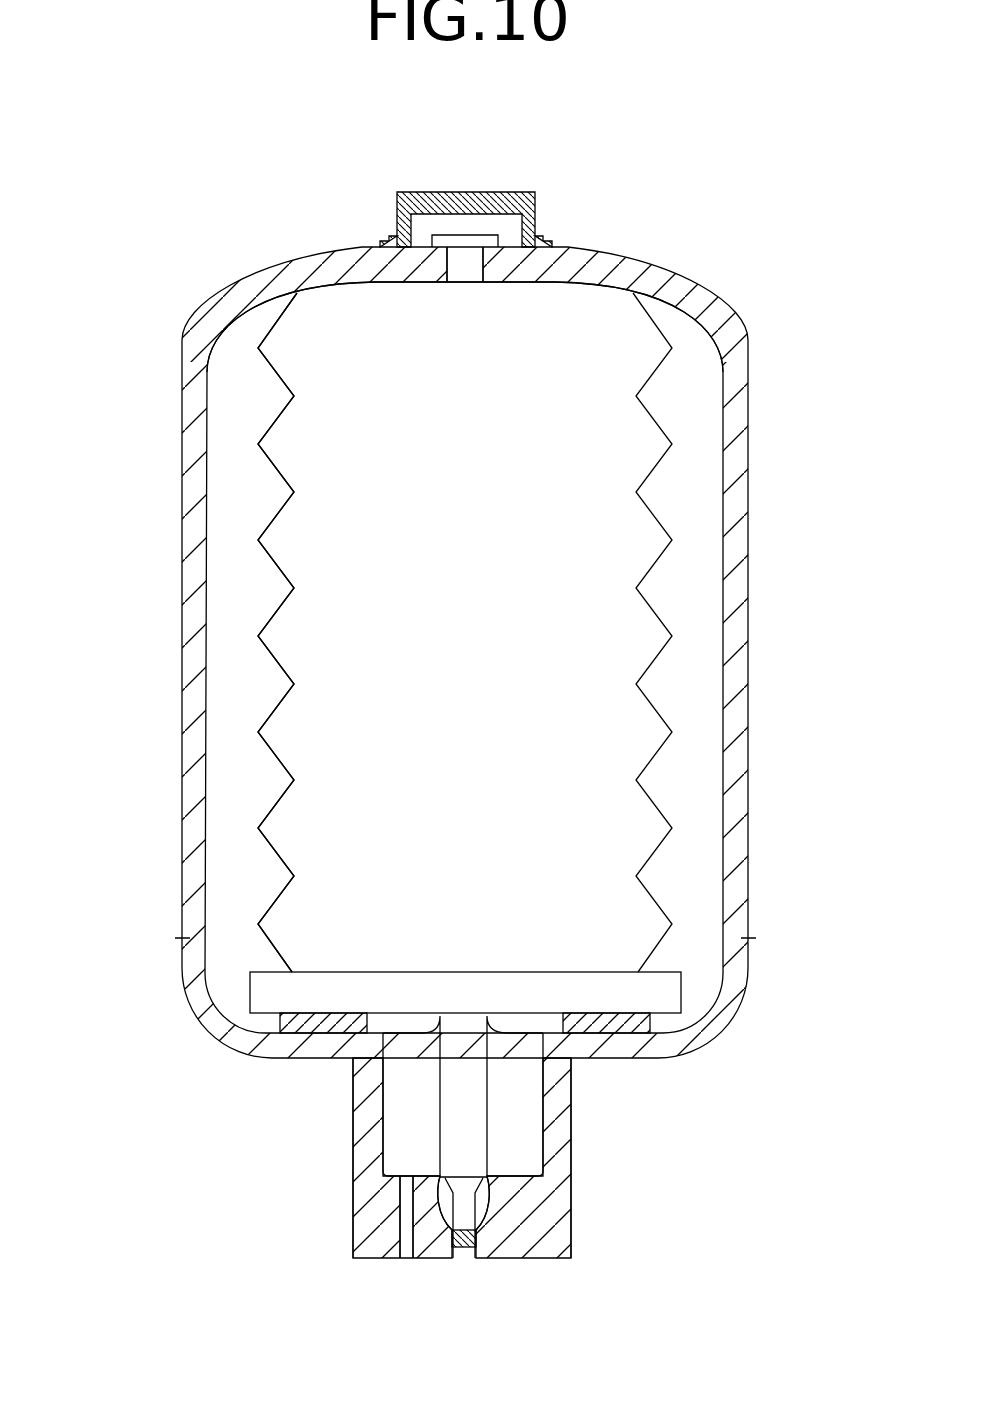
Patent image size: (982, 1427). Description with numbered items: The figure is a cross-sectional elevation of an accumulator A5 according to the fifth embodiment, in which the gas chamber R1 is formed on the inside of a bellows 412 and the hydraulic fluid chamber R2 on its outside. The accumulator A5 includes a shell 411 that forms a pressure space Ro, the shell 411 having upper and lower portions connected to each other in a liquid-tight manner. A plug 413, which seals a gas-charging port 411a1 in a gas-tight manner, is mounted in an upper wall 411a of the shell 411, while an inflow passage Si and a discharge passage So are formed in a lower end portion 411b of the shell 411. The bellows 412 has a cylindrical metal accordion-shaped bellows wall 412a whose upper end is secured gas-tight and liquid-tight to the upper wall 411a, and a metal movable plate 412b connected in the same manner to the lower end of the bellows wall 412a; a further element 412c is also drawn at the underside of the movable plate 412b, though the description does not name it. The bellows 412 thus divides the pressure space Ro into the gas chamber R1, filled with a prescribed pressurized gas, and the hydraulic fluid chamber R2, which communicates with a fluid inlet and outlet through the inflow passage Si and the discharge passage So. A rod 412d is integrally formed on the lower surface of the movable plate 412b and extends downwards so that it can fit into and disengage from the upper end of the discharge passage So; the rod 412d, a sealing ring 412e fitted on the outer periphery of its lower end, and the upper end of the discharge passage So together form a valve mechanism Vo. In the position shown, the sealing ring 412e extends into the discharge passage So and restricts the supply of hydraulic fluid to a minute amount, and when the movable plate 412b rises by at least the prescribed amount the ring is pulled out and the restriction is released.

The shell 411 is at (196, 452).
The upper wall 411a is at (597, 270).
The gas-charging port 411a1 is at (467, 287).
The lower end portion 411b is at (622, 1052).
The bellows 412 is at (660, 845).
The bellows wall 412a is at (280, 858).
The movable plate 412b is at (655, 993).
The seal member 412c is at (305, 1028).
The rod 412d is at (465, 1208).
The sealing ring 412e is at (478, 1245).
The plug 413 is at (468, 240).
The accumulator A5 is at (744, 286).
The gas chamber R1 is at (308, 705).
The hydraulic fluid chamber R2 is at (695, 760).
The pressure space Ro is at (699, 565).
The valve mechanism Vo is at (496, 1223).
The inflow passage Si is at (406, 1258).
The discharge passage So is at (464, 1258).